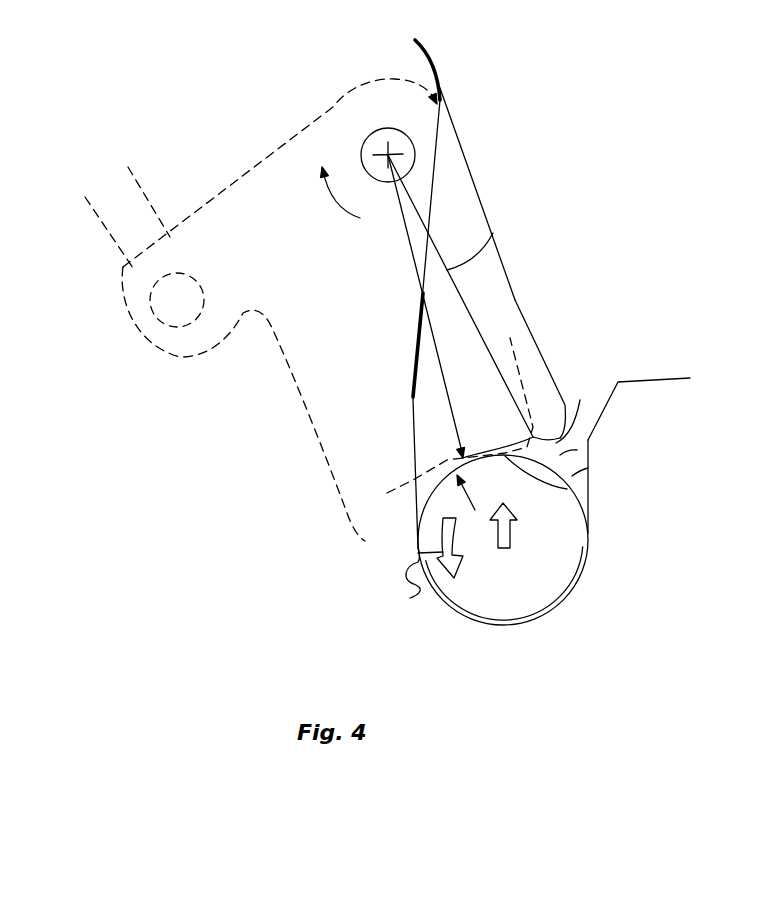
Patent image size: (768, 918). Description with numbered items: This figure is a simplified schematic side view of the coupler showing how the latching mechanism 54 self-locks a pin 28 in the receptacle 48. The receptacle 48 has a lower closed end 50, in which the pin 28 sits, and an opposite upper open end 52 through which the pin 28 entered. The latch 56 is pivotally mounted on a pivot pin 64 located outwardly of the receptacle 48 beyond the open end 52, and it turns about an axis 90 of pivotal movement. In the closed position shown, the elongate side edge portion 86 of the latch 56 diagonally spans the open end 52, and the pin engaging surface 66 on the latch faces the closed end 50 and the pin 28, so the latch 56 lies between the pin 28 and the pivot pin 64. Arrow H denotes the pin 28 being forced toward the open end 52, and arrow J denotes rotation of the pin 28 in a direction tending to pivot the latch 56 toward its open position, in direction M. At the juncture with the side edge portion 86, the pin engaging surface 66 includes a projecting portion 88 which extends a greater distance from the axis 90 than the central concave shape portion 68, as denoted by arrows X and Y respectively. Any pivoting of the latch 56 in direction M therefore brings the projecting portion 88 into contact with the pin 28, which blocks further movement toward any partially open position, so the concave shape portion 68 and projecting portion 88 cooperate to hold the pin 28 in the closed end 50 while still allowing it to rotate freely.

The pivot pin 64 is at (373, 128).
The axis of pivotal movement 90 is at (392, 153).
The latching mechanism 54 is at (479, 176).
The latch 56 is at (515, 287).
The side edge portion 86 is at (538, 340).
The projecting portion 88 is at (580, 400).
The open end 52 is at (588, 441).
The receptacle 48 is at (588, 468).
The pin 28 is at (588, 531).
The closed end 50 is at (552, 607).
The concave shape portion 68 is at (473, 455).
The pin engaging surface 66 is at (410, 510).
The direction of pivotal movement M is at (327, 213).
The arrow denoting distance of projecting portion X is at (493, 233).
The arrow denoting distance of concave portion Y is at (413, 250).
The arrow denoting pin rotation J is at (404, 578).
The arrow denoting pin movement H is at (498, 541).